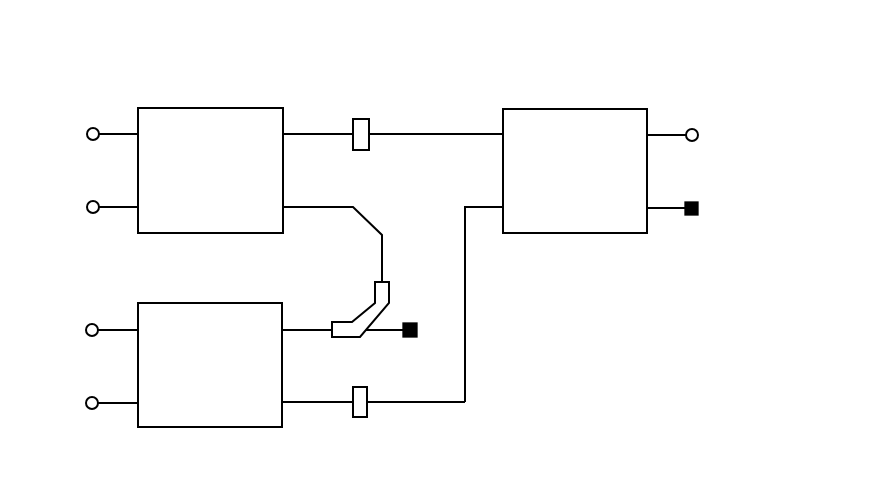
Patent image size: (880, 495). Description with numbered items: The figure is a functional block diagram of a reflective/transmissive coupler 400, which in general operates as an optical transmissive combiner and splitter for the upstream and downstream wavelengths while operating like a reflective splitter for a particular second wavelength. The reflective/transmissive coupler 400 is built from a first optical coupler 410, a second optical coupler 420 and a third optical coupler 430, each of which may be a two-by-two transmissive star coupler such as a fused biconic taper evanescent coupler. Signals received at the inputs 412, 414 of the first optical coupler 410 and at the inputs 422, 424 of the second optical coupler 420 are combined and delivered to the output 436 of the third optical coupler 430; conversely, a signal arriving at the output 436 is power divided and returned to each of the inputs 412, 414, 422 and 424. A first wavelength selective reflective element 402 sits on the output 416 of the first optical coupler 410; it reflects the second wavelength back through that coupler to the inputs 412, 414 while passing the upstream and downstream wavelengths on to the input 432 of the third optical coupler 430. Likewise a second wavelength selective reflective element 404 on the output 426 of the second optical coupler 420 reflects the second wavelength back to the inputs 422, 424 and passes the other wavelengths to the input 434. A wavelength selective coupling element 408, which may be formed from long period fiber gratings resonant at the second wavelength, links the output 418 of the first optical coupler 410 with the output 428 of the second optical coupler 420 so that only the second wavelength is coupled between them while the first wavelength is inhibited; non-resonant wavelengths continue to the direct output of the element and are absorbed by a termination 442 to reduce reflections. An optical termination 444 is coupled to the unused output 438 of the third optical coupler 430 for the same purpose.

The reflective/transmissive coupler 400 is at (538, 68).
The first wavelength selective reflective element 402 is at (361, 119).
The second wavelength selective reflective element 404 is at (361, 386).
The wavelength selective coupling element 408 is at (390, 283).
The first optical coupler 410 is at (268, 109).
The input 412 is at (122, 132).
The input 414 is at (122, 205).
The output 416 is at (302, 134).
The output 418 is at (302, 207).
The second optical coupler 420 is at (268, 302).
The input 422 is at (122, 329).
The input 424 is at (122, 402).
The output 426 is at (302, 401).
The output 428 is at (302, 329).
The third optical coupler 430 is at (633, 105).
The input 432 is at (488, 133).
The input 434 is at (488, 206).
The output 436 is at (667, 134).
The output 438 is at (668, 210).
The termination 442 is at (413, 323).
The optical termination 444 is at (694, 202).